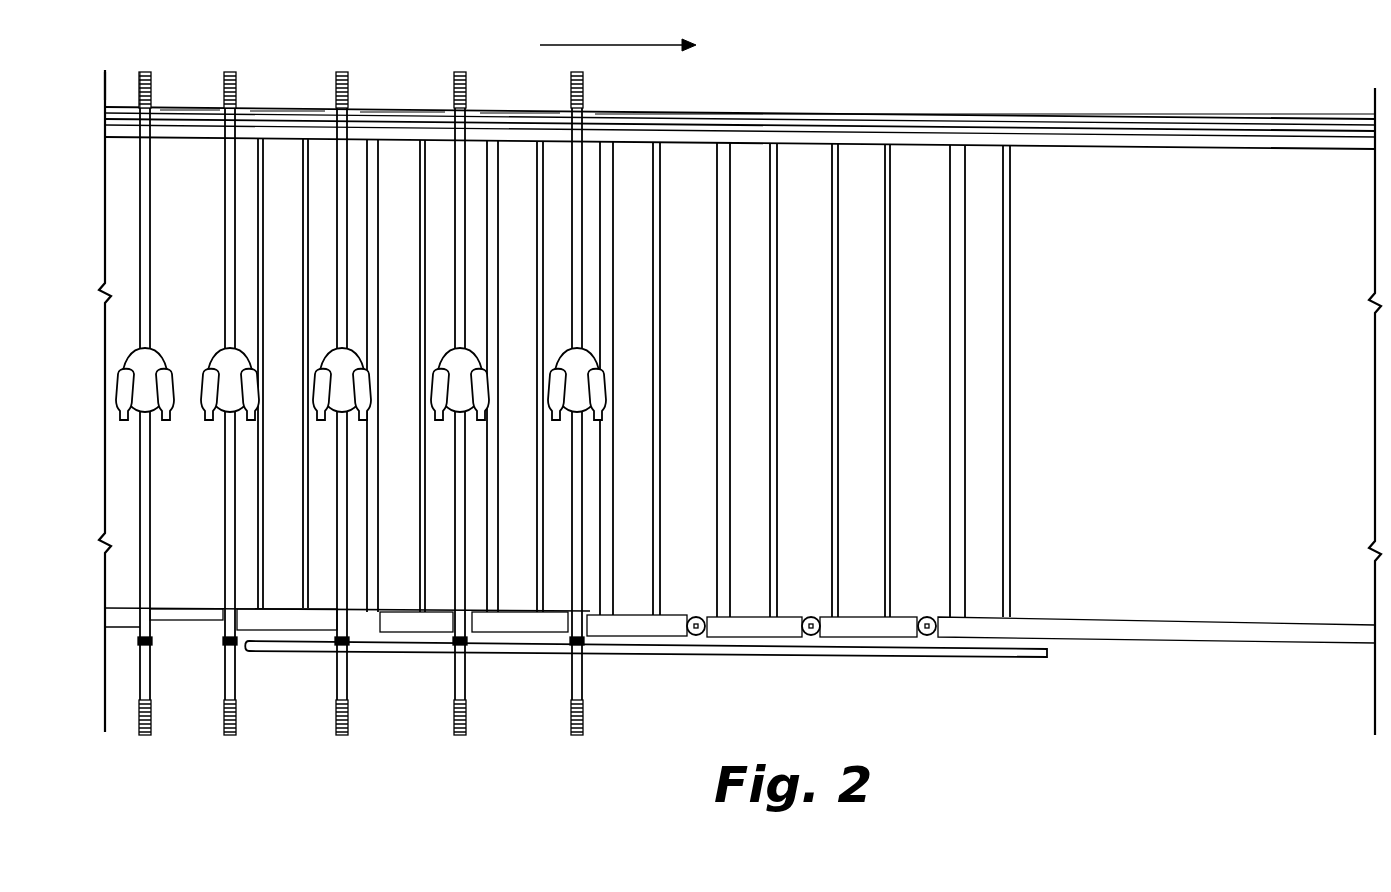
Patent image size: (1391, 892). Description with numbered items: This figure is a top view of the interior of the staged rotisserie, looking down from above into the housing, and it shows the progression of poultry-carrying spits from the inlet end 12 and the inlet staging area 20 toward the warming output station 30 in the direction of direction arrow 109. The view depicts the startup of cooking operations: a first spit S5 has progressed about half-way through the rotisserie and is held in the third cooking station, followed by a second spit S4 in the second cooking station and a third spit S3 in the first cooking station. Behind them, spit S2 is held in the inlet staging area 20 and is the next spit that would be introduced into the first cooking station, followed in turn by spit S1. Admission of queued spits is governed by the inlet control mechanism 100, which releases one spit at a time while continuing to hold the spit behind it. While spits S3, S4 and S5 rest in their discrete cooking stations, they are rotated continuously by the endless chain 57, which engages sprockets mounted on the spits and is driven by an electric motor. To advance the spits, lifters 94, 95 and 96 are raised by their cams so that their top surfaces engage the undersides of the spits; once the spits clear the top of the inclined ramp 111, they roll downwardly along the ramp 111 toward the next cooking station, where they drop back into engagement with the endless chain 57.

The inlet end 12 is at (112, 68).
The inlet staging area 20 is at (186, 66).
The warming output station 30 is at (1190, 192).
The direction arrow 109 is at (612, 45).
The inlet control mechanism 100 is at (206, 634).
The lifter 94 is at (700, 636).
The lifter 95 is at (815, 636).
The lifter 96 is at (928, 636).
The endless chain 57 is at (875, 658).
The inclined ramp 111 is at (1018, 641).
The spit S1 is at (151, 688).
The spit S2 is at (236, 688).
The spit S3 is at (348, 688).
The spit S4 is at (466, 688).
The spit S5 is at (583, 688).